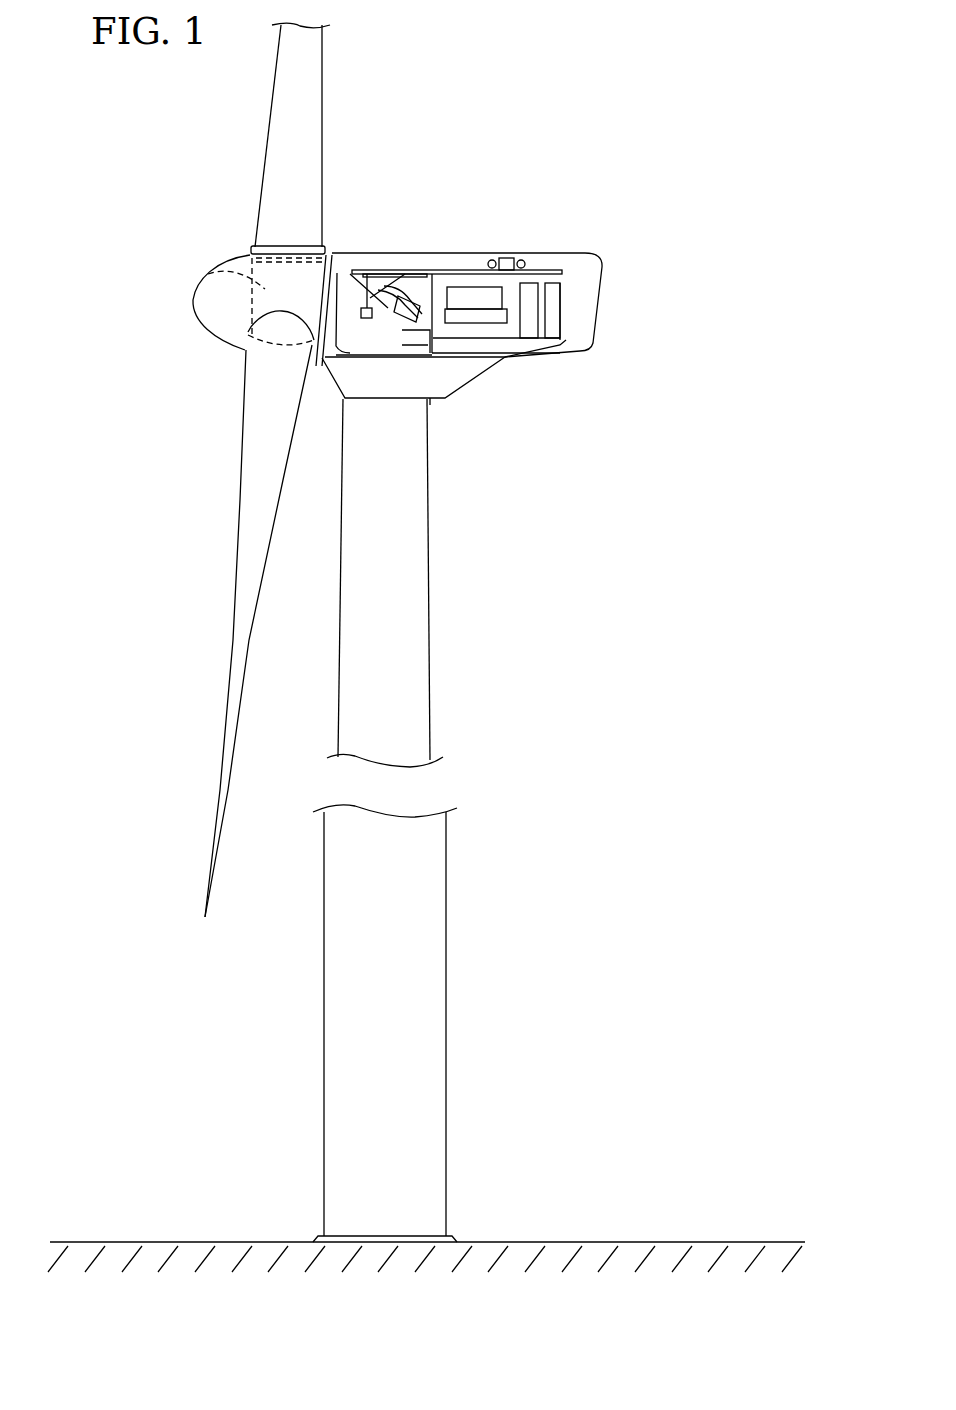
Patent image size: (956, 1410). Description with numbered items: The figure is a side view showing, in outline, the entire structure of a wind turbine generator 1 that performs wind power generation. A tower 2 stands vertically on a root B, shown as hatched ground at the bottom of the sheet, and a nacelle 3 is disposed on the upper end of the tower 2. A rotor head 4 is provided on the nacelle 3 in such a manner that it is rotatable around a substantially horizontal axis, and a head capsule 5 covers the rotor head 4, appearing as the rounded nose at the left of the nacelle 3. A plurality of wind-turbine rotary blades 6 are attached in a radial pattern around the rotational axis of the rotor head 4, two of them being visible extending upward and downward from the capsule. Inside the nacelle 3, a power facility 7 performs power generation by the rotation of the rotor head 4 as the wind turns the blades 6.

The wind turbine generator 1 is at (612, 110).
The tower 2 is at (444, 948).
The nacelle 3 is at (616, 296).
The rotor head 4 is at (212, 275).
The head capsule 5 is at (213, 326).
The wind-turbine rotary blades 6 is at (268, 105).
The power facility 7 is at (476, 258).
The root B is at (315, 1242).